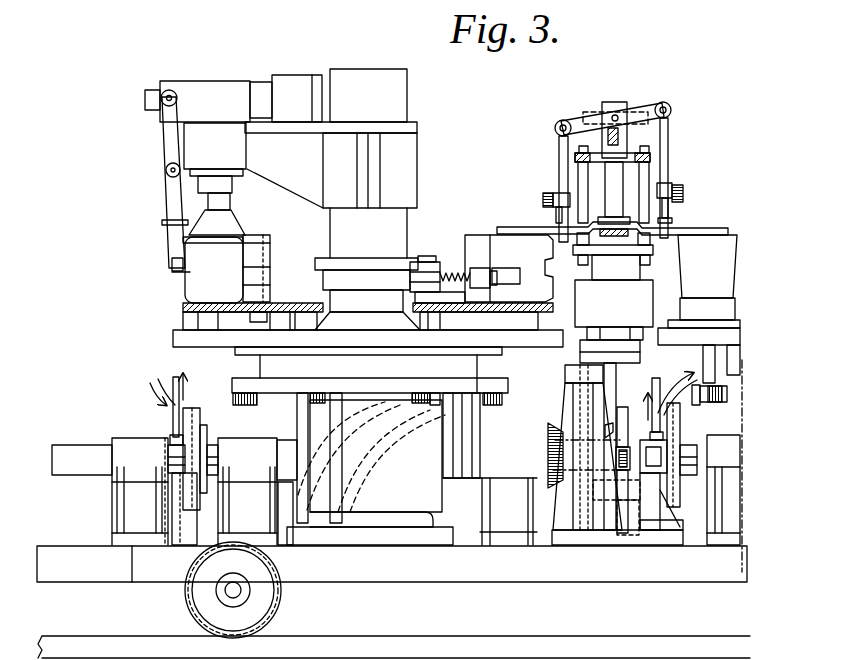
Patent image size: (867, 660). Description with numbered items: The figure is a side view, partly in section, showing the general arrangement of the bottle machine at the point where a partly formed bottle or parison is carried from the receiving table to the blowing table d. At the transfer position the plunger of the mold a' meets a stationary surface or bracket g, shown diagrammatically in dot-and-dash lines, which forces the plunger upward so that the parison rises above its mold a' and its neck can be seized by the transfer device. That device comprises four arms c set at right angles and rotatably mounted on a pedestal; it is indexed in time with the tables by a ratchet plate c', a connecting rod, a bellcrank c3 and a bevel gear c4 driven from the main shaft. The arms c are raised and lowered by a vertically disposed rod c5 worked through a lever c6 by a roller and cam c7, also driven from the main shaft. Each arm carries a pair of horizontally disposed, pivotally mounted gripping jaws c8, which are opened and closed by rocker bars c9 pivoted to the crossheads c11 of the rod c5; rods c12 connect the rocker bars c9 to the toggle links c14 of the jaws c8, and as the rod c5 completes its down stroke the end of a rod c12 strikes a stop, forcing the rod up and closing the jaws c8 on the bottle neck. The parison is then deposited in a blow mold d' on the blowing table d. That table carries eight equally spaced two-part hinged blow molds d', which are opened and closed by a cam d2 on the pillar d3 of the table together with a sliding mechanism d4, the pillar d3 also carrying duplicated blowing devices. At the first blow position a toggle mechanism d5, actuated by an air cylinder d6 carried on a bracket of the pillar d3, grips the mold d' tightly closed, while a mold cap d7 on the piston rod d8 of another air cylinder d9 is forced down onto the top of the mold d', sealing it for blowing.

The blowing table d is at (351, 325).
The blow mold d' is at (345, 251).
The cam d2 is at (378, 263).
The pillar d3 is at (395, 93).
The sliding mechanism d4 is at (451, 268).
The toggle mechanism d5 is at (170, 200).
The air cylinder d6 is at (296, 92).
The mold cap d7 is at (222, 228).
The piston rod d8 is at (230, 202).
The air cylinder d9 is at (215, 149).
The transfer arms c is at (619, 254).
The ratchet plate c' is at (614, 321).
The bellcrank c3 is at (575, 372).
The bevel gear c4 is at (552, 427).
The vertical rod c5 is at (612, 190).
The lever c6 is at (636, 512).
The roller and cam c7 is at (627, 440).
The gripping jaws c8 is at (506, 226).
The rocker bars c9 is at (620, 118).
The crossheads c11 is at (600, 115).
The rods c12 is at (560, 153).
The toggle links c14 is at (548, 203).
The mold a' is at (699, 309).
The disc f is at (424, 441).
The stationary surface or bracket g is at (716, 403).